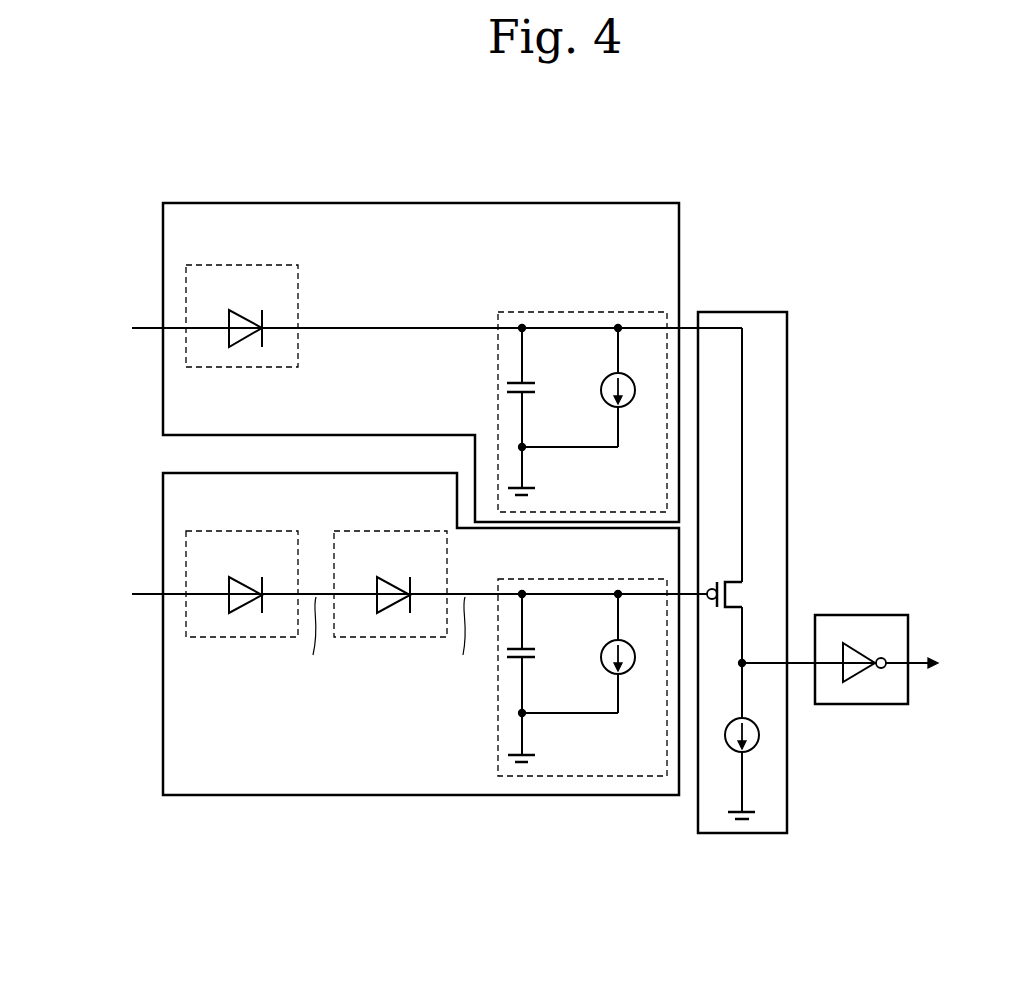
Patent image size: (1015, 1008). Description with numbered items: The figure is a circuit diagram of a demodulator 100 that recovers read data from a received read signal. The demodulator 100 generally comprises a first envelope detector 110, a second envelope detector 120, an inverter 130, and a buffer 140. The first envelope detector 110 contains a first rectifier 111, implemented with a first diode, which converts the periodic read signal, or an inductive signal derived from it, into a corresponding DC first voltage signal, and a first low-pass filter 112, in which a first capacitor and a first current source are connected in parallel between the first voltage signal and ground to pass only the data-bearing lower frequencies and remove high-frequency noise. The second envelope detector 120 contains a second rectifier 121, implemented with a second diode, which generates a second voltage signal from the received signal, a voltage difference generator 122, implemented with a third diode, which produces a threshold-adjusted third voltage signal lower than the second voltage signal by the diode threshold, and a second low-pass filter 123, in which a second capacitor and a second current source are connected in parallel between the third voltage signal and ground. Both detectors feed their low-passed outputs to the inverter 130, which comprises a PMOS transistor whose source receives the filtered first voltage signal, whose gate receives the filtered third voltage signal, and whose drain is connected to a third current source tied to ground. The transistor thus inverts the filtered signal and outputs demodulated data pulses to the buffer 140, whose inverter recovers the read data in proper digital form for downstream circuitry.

The demodulator 100 is at (928, 248).
The first envelope detector 110 is at (449, 203).
The first rectifier 111 is at (257, 263).
The first low-pass filter 112 is at (625, 312).
The second envelope detector 120 is at (423, 795).
The second rectifier 121 is at (257, 531).
The voltage difference generator 122 is at (406, 531).
The second low-pass filter 123 is at (625, 579).
The inverter 130 is at (745, 312).
The buffer 140 is at (867, 615).